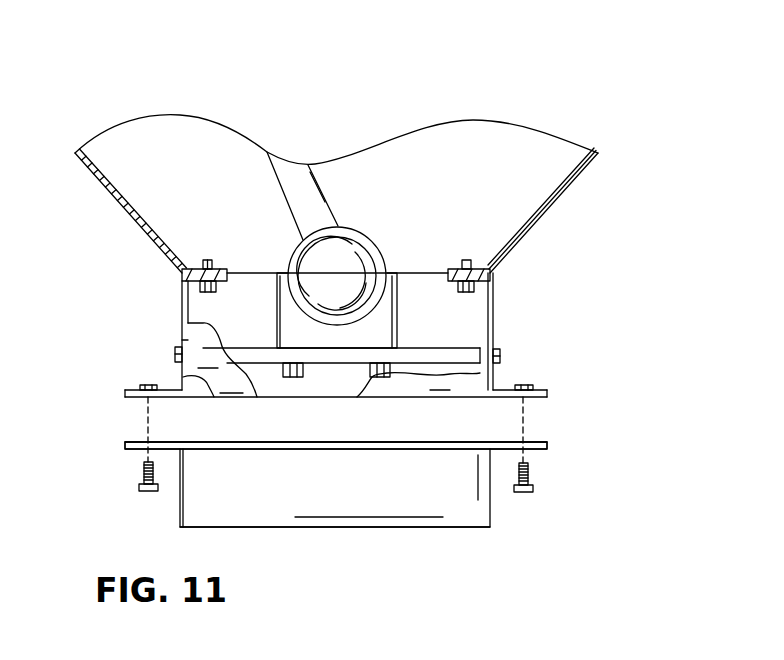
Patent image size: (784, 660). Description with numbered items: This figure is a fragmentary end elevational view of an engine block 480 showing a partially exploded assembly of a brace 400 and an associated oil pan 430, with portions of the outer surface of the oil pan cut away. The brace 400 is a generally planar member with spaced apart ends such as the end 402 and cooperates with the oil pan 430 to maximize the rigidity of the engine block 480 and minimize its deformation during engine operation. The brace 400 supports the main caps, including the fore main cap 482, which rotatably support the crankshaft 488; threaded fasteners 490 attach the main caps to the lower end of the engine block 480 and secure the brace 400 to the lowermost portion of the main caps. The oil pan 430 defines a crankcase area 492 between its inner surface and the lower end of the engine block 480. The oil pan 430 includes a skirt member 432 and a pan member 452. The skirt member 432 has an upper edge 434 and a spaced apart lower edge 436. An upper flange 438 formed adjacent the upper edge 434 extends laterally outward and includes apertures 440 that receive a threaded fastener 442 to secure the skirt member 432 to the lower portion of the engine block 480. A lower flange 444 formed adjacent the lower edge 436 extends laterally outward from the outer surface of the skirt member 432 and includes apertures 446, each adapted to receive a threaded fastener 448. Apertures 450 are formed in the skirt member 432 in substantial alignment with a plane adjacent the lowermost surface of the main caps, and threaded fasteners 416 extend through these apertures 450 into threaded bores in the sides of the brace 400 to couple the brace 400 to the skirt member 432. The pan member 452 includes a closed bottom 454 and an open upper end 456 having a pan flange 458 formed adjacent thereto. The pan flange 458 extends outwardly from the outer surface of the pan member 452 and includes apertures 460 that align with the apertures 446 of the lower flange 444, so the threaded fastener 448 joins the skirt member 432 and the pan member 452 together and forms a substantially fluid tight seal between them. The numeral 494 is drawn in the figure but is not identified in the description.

The brace 400 is at (467, 348).
The end 402 is at (343, 355).
The threaded fastener 416 is at (174, 352).
The oil pan 430 is at (147, 507).
The skirt member 432 is at (182, 301).
The upper edge 434 is at (182, 275).
The lower edge 436 is at (220, 372).
The upper flange 438 is at (232, 276).
The apertures 440 is at (217, 286).
The threaded fastener 442 is at (205, 292).
The lower flange 444 is at (127, 392).
The apertures 446 is at (150, 397).
The threaded fastener 448 is at (141, 477).
The apertures 450 is at (182, 345).
The pan member 452 is at (481, 507).
The closed bottom 454 is at (469, 528).
The open upper end 456 is at (423, 442).
The pan flange 458 is at (548, 445).
The apertures 460 is at (148, 440).
The engine block 480 is at (563, 197).
The fore main cap 482 is at (397, 314).
The crankshaft 488 is at (352, 253).
The threaded fasteners 490 is at (293, 378).
The crankcase area 492 is at (325, 184).
The side bracket 494 is at (476, 307).